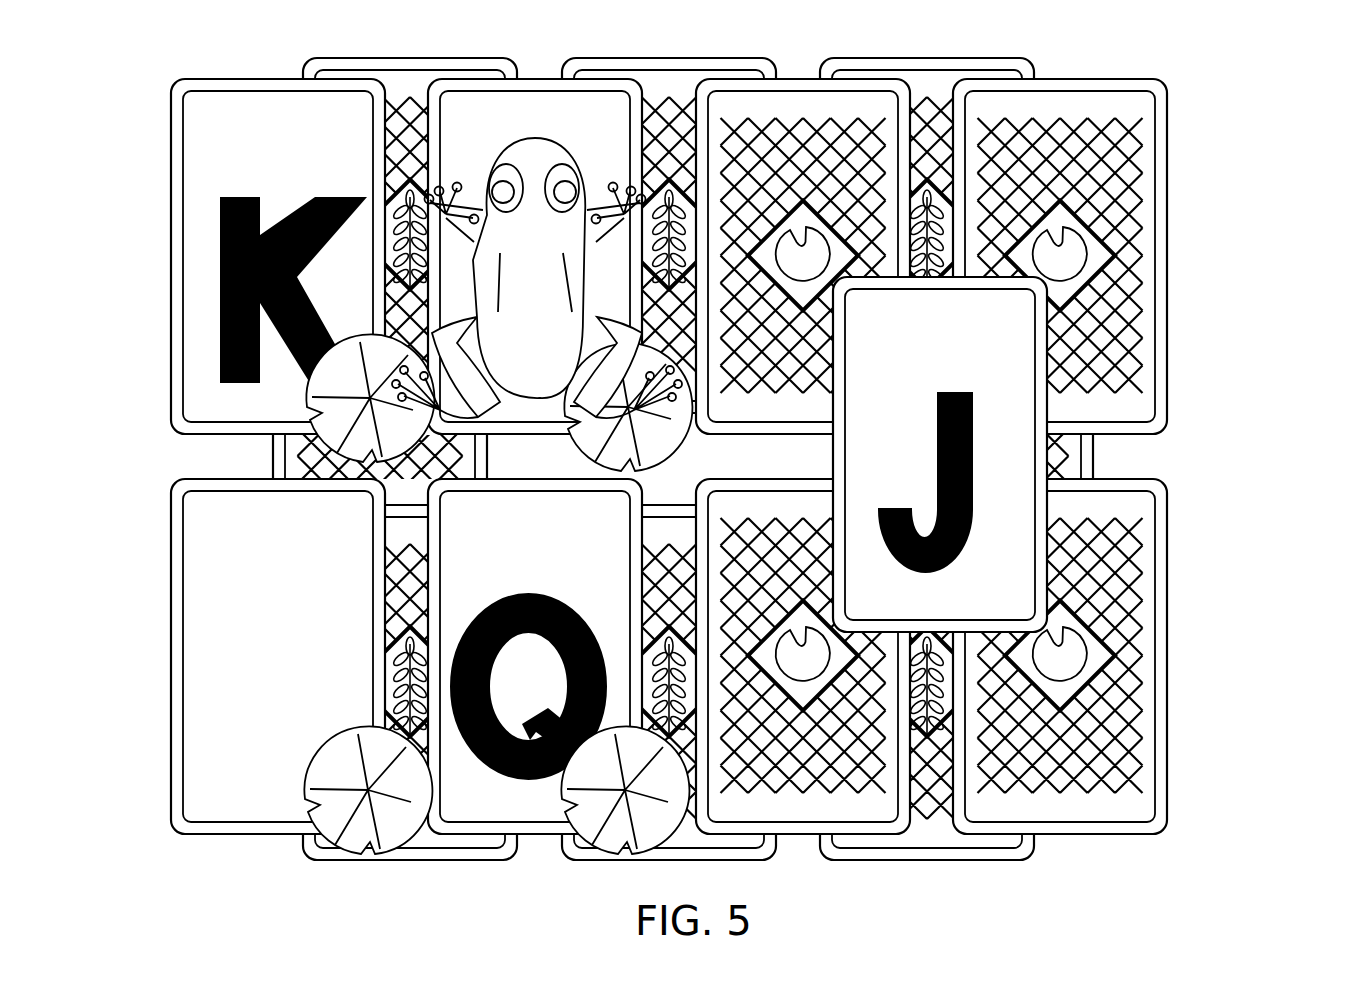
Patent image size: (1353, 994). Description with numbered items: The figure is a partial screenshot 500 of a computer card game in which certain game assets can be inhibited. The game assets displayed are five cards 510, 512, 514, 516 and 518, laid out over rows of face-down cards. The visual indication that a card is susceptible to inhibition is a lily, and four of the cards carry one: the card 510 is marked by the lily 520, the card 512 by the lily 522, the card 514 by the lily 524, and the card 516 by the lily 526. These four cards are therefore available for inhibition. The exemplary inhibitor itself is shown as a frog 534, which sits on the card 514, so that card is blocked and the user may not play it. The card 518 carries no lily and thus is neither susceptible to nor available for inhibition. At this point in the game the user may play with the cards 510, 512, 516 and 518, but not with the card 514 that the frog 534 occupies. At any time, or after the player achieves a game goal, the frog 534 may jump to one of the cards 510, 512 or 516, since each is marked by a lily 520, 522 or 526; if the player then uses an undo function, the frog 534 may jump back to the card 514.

The partial screenshot 500 is at (1249, 128).
The card 510 is at (203, 176).
The card 512 is at (207, 582).
The card 514 is at (497, 122).
The card 516 is at (475, 790).
The card 518 is at (1012, 433).
The lily 520 is at (300, 386).
The lily 522 is at (305, 815).
The lily 524 is at (594, 447).
The lily 526 is at (560, 836).
The frog 534 is at (533, 278).